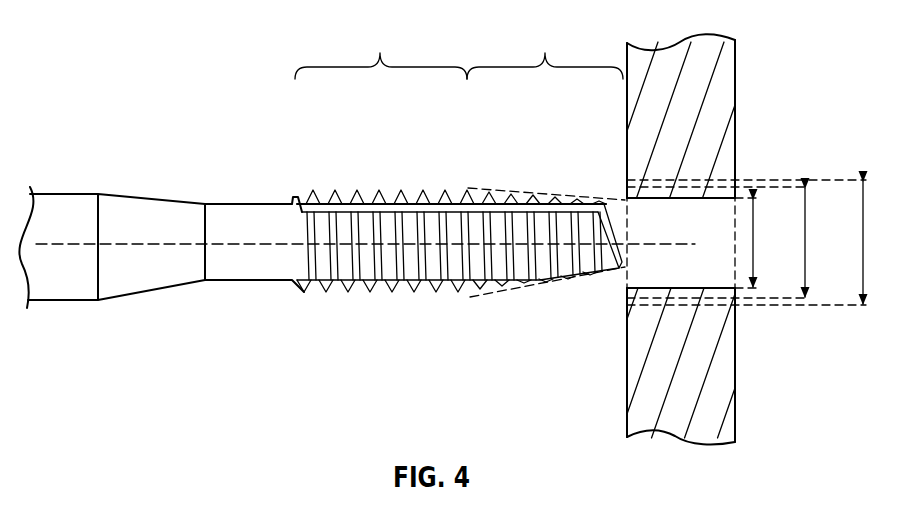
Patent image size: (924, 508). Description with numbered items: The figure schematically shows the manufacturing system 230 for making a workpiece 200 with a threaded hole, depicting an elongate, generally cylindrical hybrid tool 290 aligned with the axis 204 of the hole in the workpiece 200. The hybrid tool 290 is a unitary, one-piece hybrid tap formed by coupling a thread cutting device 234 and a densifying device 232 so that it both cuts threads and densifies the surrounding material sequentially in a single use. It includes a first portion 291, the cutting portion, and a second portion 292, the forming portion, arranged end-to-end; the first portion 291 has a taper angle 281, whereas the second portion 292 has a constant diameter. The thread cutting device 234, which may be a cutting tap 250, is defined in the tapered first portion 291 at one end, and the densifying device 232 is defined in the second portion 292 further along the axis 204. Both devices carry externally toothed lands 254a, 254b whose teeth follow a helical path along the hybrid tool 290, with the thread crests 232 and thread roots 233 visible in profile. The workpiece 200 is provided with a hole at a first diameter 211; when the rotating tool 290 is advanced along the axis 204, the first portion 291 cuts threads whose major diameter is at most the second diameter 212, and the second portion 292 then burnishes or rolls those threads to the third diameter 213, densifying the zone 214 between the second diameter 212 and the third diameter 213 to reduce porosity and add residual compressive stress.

The manufacturing system 230 is at (101, 125).
The second portion 292 is at (381, 49).
The first portion 291 is at (545, 49).
The densifying device 232 is at (367, 181).
The thread root 233 is at (372, 248).
The toothed land 254a is at (398, 203).
The toothed land 254b is at (413, 278).
The taper angle 281 is at (547, 242).
The thread cutting device 234 is at (555, 181).
The hybrid tool 290 is at (457, 295).
The cutting tap 250 is at (542, 267).
The zone 214 is at (630, 294).
The workpiece 200 is at (718, 107).
The axis 204 is at (650, 244).
The first diameter 211 is at (757, 227).
The second diameter 212 is at (805, 227).
The third diameter 213 is at (863, 227).